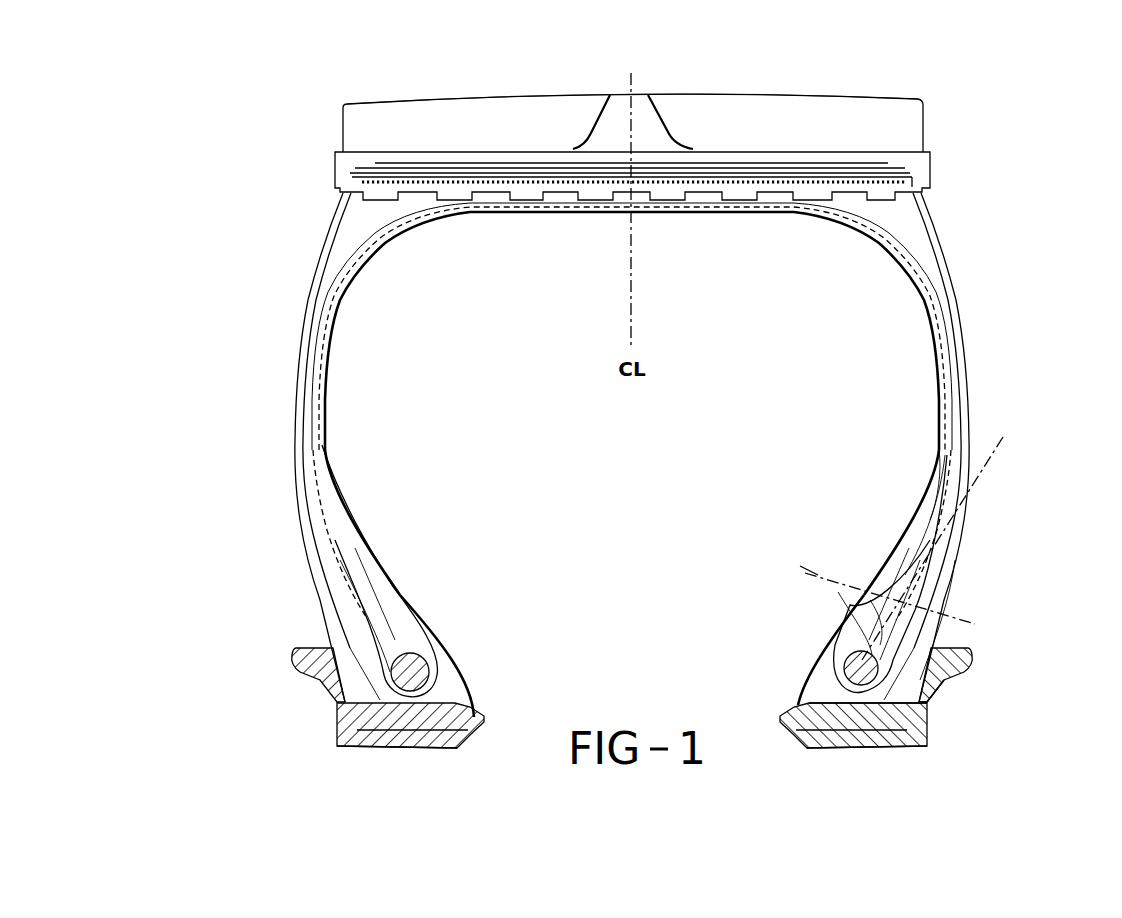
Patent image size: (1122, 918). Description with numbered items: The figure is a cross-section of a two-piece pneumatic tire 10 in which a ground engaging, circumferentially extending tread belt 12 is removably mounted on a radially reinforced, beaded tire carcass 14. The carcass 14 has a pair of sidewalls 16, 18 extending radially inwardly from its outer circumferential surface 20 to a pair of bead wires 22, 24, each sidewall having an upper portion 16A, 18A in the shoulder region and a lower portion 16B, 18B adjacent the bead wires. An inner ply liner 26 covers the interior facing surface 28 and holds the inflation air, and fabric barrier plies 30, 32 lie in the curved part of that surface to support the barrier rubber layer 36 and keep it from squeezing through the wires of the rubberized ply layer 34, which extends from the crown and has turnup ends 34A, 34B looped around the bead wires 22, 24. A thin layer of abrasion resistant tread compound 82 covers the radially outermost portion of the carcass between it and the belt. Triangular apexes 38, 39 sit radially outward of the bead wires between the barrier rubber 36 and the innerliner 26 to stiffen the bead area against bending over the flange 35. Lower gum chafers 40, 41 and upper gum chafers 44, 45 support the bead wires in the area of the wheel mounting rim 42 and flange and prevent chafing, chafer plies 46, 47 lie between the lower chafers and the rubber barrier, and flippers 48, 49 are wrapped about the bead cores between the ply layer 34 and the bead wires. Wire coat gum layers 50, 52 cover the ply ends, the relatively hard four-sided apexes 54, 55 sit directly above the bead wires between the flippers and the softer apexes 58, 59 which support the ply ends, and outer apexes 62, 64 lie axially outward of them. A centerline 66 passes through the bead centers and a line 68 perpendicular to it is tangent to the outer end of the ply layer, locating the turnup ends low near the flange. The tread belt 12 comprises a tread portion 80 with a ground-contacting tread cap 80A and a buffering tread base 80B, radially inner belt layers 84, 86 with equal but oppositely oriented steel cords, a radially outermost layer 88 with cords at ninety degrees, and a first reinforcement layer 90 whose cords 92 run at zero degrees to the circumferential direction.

The two-piece pneumatic tire 10 is at (980, 392).
The tread belt 12 is at (880, 95).
The tire carcass 14 is at (955, 283).
The tire sidewall 16 is at (965, 343).
The upper portion of sidewall 16A is at (932, 232).
The lower portion of sidewall 16B is at (957, 573).
The tire sidewall 18 is at (306, 345).
The upper portion of sidewall 18A is at (337, 233).
The lower portion of sidewall 18B is at (313, 572).
The outer circumferential surface 20 is at (893, 183).
The bead wire 22 is at (900, 717).
The bead wire 24 is at (400, 709).
The inner ply liner 26 is at (942, 440).
The axially inward surface 28 is at (935, 355).
The fabric barrier ply 30 is at (770, 203).
The fabric barrier ply 32 is at (703, 205).
The rubberized laminated ply layer 34 is at (870, 243).
The turnup end of ply layer 34A is at (952, 622).
The turnup end of ply layer 34B is at (370, 620).
The flange 35 is at (975, 652).
The barrier rubber layer 36 is at (950, 398).
The apex 38 is at (918, 522).
The apex 39 is at (350, 530).
The lower gum chafer 40 is at (822, 700).
The lower gum chafer 41 is at (455, 707).
The wheel mounting rim 42 is at (905, 742).
The upper gum chafer 44 is at (925, 680).
The upper gum chafer 45 is at (352, 664).
The chafer ply 46 is at (860, 712).
The chafer ply 47 is at (409, 712).
The flipper 48 is at (835, 640).
The flipper 49 is at (410, 648).
The wire coat gum layer 50 is at (925, 607).
The wire coat gum layer 52 is at (918, 603).
The apex 54 is at (885, 628).
The apex 55 is at (385, 628).
The apex 58 is at (942, 531).
The apex 59 is at (328, 530).
The outer apex 62 is at (950, 550).
The outer apex 64 is at (323, 553).
The centerline 66 is at (833, 668).
The line perpendicular to centerline 68 is at (800, 586).
The tread portion 80 is at (925, 120).
The tread cap 80A is at (368, 128).
The tread base 80B is at (350, 164).
The abrasion resistant tread compound 82 is at (412, 198).
The tread belt layer 84 is at (820, 180).
The tread belt layer 86 is at (762, 182).
The third belt layer 88 is at (715, 180).
The first reinforcement layer 90 is at (452, 178).
The cords 92 is at (525, 182).